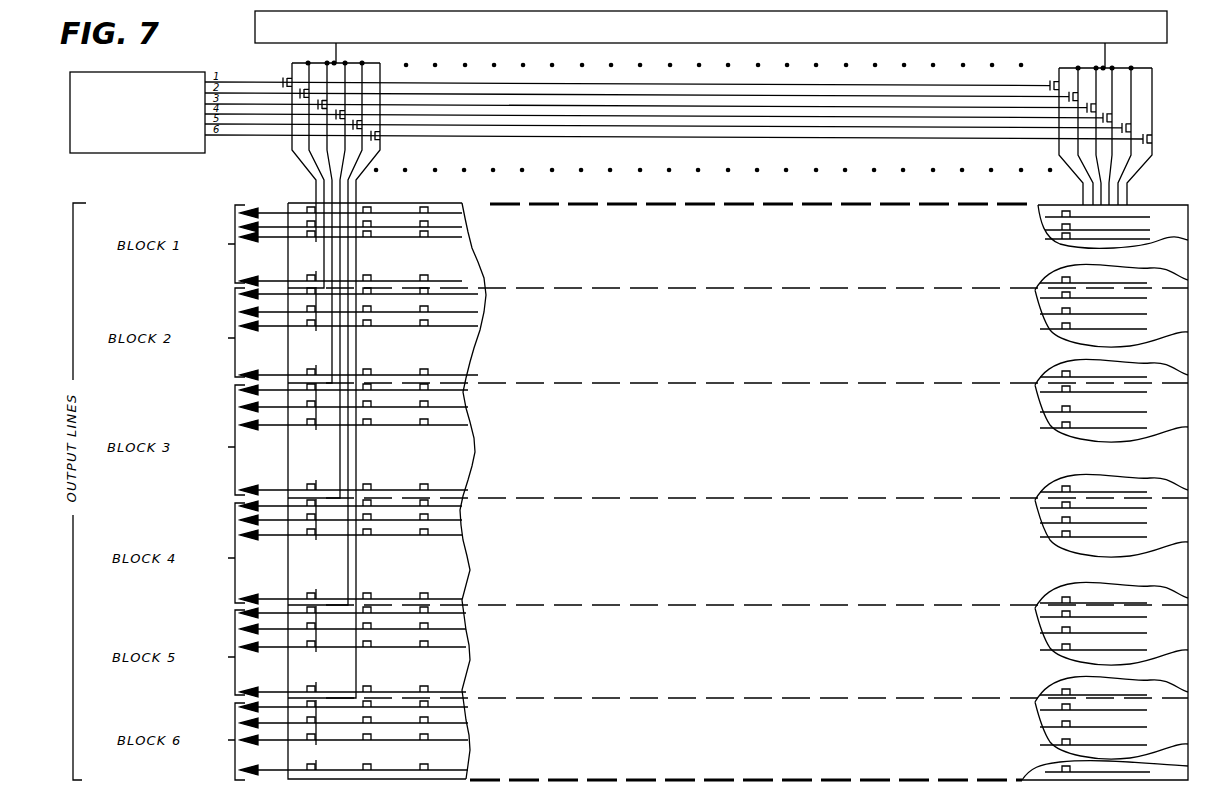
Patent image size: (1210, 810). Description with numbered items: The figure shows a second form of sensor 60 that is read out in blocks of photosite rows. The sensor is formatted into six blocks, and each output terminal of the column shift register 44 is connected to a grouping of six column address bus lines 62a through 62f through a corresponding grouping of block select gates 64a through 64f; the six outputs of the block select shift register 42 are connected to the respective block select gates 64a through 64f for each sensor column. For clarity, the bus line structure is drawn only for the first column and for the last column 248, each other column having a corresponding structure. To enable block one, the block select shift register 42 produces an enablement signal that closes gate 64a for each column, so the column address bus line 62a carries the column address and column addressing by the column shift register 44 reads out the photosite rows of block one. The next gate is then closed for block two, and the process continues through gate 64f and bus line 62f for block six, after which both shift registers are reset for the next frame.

The block select shift register 42 is at (130, 153).
The column shift register 44 is at (255, 22).
The sensor 60 is at (878, 549).
The column address bus line 62a is at (294, 153).
The column address bus line 62f is at (367, 170).
The block select gate 64a is at (289, 78).
The block select gate 64f is at (382, 139).
The vertical column 248 is at (1101, 118).